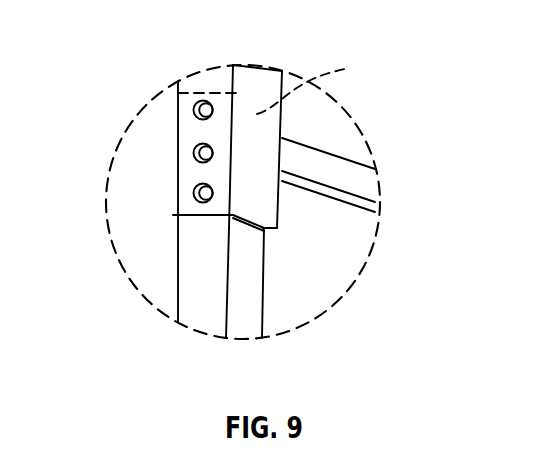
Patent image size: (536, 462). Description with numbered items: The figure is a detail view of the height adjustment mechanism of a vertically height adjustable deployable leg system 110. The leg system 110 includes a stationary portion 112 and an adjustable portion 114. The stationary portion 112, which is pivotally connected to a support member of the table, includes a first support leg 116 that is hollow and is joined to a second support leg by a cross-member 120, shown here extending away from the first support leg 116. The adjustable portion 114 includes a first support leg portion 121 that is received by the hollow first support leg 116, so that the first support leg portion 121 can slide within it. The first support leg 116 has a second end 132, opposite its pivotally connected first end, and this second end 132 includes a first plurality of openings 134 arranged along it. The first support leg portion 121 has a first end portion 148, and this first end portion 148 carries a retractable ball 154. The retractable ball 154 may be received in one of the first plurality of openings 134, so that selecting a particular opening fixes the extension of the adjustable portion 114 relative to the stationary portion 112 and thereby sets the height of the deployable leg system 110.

The vertically height adjustable deployable leg system 110 is at (319, 292).
The stationary portion 112 is at (174, 156).
The adjustable portion 114 is at (267, 313).
The first support leg 116 is at (204, 84).
The cross-member 120 is at (366, 183).
The first support leg portion 121 is at (193, 263).
The second end 132 is at (258, 212).
The first plurality of openings 134 is at (191, 193).
The first end portion 148 is at (323, 84).
The retractable ball 154 is at (188, 139).